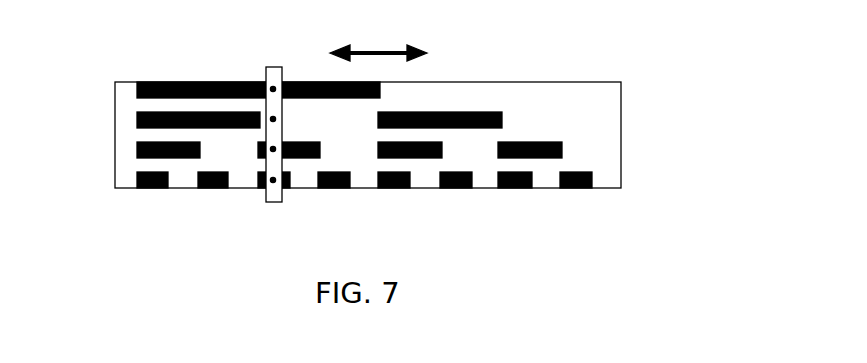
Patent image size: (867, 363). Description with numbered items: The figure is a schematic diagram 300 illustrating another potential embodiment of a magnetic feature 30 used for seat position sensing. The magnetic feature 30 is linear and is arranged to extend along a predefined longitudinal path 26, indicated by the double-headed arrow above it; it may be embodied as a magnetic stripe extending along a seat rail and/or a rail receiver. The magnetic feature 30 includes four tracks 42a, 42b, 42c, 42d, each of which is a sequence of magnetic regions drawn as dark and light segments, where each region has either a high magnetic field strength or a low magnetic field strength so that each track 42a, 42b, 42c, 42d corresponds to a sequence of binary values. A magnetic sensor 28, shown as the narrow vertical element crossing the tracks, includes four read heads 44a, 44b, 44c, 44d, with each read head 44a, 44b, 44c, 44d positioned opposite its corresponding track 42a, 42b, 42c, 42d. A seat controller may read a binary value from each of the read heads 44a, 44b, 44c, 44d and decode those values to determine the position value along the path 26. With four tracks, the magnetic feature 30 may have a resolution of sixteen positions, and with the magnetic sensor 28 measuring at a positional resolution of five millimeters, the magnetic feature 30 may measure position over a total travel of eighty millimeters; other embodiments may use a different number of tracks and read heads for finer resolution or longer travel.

The schematic diagram 300 is at (708, 70).
The magnetic feature 30 is at (608, 81).
The track 42a is at (130, 90).
The track 42b is at (130, 120).
The track 42c is at (130, 150).
The track 42d is at (130, 180).
The magnetic sensor 28 is at (273, 203).
The read head 44a is at (272, 86).
The read head 44b is at (270, 117).
The read head 44c is at (271, 149).
The read head 44d is at (271, 181).
The predefined longitudinal path 26 is at (380, 50).